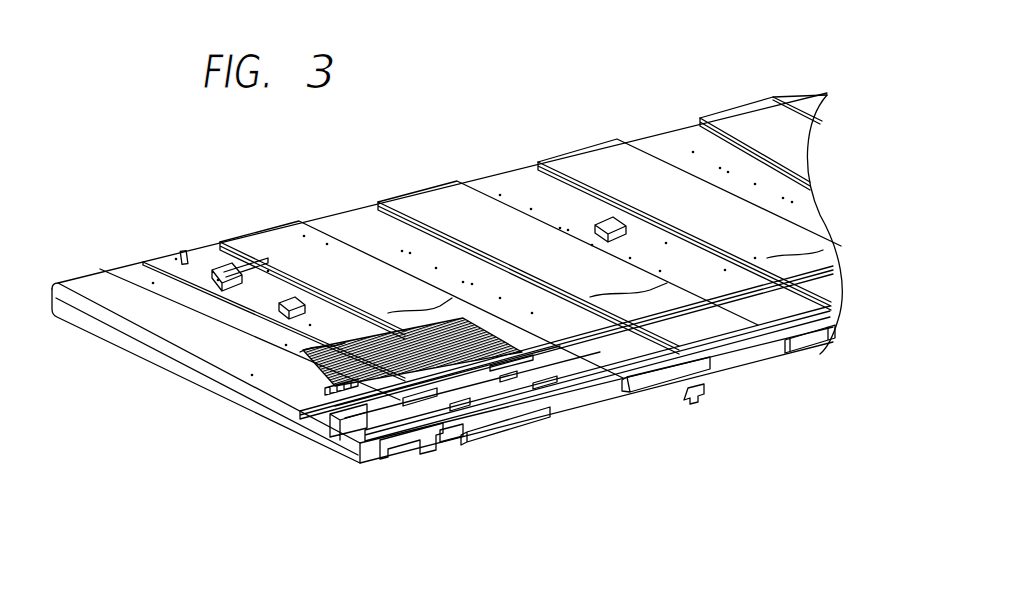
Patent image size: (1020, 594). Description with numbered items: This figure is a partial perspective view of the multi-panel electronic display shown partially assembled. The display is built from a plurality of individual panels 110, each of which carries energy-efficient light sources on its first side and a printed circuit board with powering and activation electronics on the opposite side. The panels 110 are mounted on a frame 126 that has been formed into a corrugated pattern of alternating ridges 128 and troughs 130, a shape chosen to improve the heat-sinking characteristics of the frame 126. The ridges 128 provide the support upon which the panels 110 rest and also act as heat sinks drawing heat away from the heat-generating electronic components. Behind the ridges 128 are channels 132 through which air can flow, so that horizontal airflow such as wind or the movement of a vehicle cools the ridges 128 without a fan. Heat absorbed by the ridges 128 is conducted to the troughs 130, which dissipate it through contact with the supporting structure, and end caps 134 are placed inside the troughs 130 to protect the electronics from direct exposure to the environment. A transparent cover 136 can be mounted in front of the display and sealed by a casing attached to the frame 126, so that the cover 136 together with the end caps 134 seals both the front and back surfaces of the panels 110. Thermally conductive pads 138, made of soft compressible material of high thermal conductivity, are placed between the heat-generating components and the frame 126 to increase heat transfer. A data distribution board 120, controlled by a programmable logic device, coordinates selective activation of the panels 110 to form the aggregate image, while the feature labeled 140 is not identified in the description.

The panel 110 is at (322, 356).
The data distribution board 120 is at (543, 372).
The frame 126 is at (653, 123).
The ridge 128 is at (684, 401).
The trough 130 is at (490, 443).
The channel 132 is at (752, 365).
The end cap 134 is at (515, 413).
The transparent cover 136 is at (836, 285).
The thermally conductive pad 138 is at (290, 233).
The sensors 140 is at (218, 270).